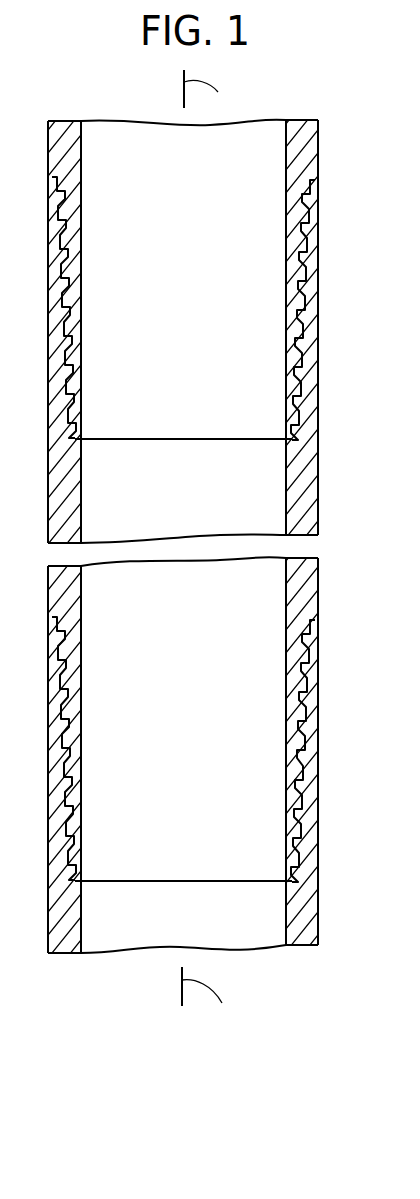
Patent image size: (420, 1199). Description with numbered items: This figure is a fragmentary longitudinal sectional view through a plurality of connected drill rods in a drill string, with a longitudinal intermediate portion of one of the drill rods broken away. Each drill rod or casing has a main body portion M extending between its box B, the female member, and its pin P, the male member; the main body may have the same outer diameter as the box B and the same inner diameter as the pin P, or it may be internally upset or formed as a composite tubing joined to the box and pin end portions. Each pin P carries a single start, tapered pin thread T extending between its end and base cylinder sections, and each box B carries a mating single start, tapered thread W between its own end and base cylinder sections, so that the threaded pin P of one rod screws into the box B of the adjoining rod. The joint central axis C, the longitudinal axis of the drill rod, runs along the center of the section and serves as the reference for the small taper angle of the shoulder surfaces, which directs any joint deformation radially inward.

The box B is at (305, 326).
The pin P is at (286, 333).
The tapered pin thread T is at (300, 385).
The tapered thread W is at (300, 360).
The main body portion M is at (318, 511).
The joint central axis C is at (209, 553).